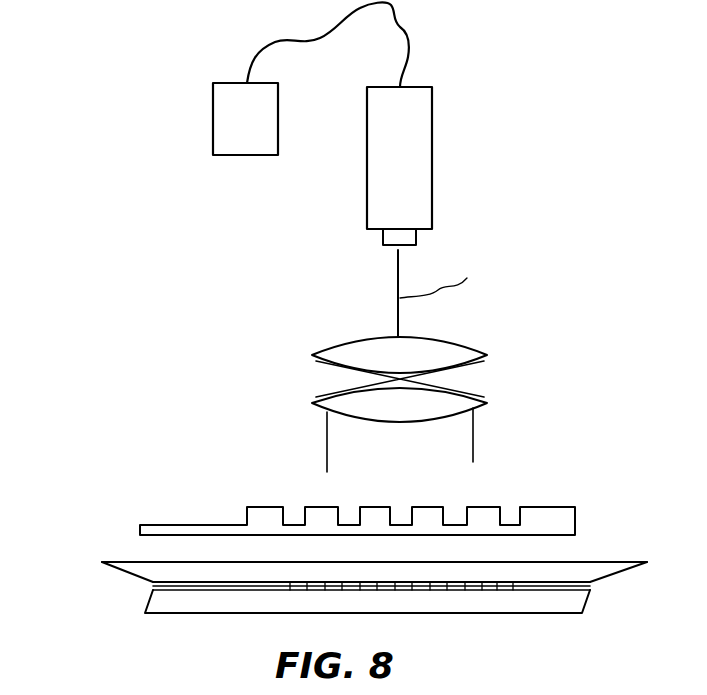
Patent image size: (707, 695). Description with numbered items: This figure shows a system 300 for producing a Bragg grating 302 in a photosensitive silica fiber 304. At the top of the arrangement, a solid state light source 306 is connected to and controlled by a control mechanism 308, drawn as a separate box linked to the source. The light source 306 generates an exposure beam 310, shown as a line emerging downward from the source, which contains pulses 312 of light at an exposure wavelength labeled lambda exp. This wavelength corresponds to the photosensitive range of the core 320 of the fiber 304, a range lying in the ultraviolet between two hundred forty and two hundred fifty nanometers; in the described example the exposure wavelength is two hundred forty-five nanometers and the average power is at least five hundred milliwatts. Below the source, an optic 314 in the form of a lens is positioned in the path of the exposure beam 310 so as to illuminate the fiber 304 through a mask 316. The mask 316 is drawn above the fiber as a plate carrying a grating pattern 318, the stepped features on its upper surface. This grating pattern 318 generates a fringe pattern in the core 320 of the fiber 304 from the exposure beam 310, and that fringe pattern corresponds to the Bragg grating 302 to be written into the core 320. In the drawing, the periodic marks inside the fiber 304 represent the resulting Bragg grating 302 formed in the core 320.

The system 300 is at (542, 112).
The Bragg grating 302 is at (598, 533).
The photosensitive silica fiber 304 is at (112, 562).
The solid state light source 306 is at (367, 193).
The control mechanism 308 is at (213, 128).
The exposure beam 310 is at (398, 263).
The pulses 312 is at (400, 302).
The optic 314 is at (342, 363).
The mask 316 is at (160, 525).
The grating pattern 318 is at (544, 459).
The core 320 is at (152, 588).